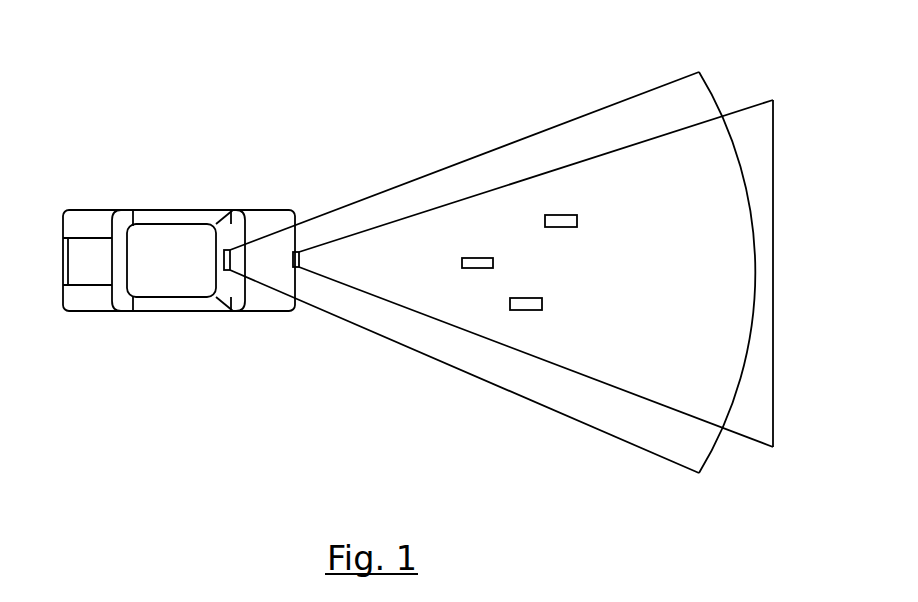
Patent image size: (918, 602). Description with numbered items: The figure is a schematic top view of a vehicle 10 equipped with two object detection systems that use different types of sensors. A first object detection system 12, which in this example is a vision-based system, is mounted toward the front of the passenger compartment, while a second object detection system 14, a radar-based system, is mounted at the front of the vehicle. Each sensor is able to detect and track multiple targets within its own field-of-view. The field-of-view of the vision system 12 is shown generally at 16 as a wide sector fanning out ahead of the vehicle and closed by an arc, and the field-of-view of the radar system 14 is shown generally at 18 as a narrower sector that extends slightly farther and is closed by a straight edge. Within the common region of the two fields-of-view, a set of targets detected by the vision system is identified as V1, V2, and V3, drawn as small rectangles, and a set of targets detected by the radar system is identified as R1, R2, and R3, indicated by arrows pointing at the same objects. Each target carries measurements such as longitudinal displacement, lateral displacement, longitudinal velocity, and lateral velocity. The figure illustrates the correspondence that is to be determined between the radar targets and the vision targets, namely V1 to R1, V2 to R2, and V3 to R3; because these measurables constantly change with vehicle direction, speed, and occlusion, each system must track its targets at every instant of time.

The vehicle 10 is at (262, 125).
The first object detection system 12 is at (231, 259).
The second object detection system 14 is at (299, 268).
The field-of-view 16 is at (430, 173).
The field-of-view 18 is at (759, 440).
The vision target V1 is at (578, 220).
The vision target V2 is at (477, 257).
The vision target V3 is at (523, 310).
The radar target R1 is at (540, 226).
The radar target R2 is at (492, 264).
The radar target R3 is at (522, 303).